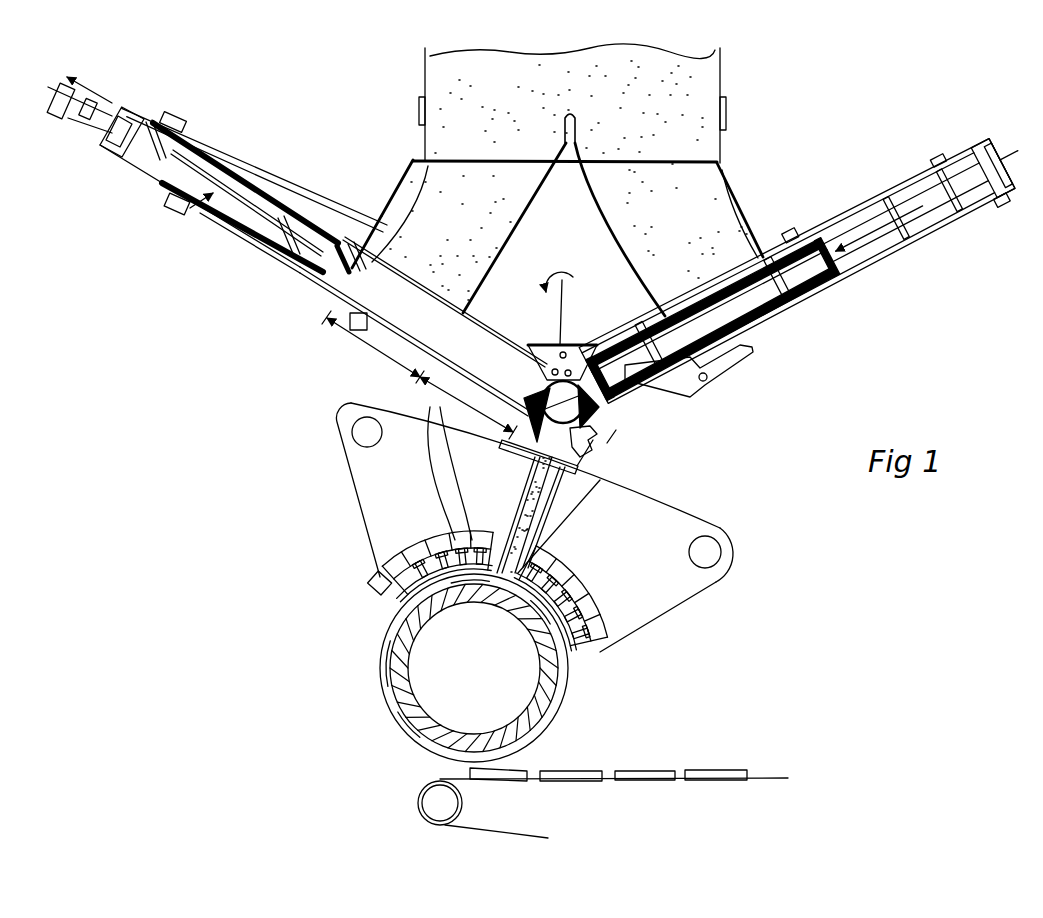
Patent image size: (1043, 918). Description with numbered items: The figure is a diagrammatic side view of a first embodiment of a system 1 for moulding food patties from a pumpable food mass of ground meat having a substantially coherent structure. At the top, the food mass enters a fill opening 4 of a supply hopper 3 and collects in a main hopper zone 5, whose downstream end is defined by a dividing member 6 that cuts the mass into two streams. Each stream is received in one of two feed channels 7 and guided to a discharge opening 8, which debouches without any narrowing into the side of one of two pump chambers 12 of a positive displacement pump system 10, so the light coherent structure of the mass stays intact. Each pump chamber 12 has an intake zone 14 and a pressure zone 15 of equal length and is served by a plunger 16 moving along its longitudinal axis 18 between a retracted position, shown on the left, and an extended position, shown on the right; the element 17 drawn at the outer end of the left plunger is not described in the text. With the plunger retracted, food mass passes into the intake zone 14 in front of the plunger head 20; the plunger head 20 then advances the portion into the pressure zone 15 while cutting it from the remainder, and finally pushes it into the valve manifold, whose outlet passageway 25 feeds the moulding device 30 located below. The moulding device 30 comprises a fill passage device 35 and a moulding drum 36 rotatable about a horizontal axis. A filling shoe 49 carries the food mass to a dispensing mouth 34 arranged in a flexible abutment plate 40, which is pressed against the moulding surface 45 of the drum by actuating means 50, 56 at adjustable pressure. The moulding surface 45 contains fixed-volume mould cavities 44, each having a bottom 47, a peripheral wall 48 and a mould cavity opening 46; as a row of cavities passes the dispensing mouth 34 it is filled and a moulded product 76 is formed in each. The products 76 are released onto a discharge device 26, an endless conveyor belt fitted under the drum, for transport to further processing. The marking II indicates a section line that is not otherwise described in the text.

The system for moulding food patties 1 is at (978, 110).
The supply hopper 3 is at (748, 93).
The fill opening 4 is at (698, 46).
The main hopper zone 5 is at (462, 88).
The dividing member 6 is at (575, 118).
The feed channel 7 is at (395, 205).
The discharge opening 8 is at (388, 250).
The positive displacement pump system 10 is at (853, 195).
The pump chamber 12 is at (476, 340).
The intake zone 14 is at (367, 337).
The pressure zone 15 is at (492, 356).
The plunger 16 is at (190, 208).
The drive 17 is at (127, 157).
The longitudinal axis 18 is at (203, 152).
The plunger head 20 is at (338, 298).
The outlet passageway 25 is at (590, 458).
The discharge device 26 is at (678, 780).
The moulding device 30 is at (762, 553).
The dispensing mouth 34 is at (600, 480).
The fill passage device 35 is at (518, 493).
The moulding drum 36 is at (572, 674).
The flexible abutment plate 40 is at (381, 562).
The mould cavity 44 is at (568, 727).
The moulding surface 45 is at (385, 560).
The mould cavity opening 46 is at (560, 722).
The bottom 47 is at (565, 712).
The peripheral wall 48 is at (537, 733).
The filling shoe 49 is at (690, 580).
The actuating means 50 is at (600, 642).
The actuating means 56 is at (447, 461).
The moulded product 76 is at (387, 660).
The section line II is at (607, 443).